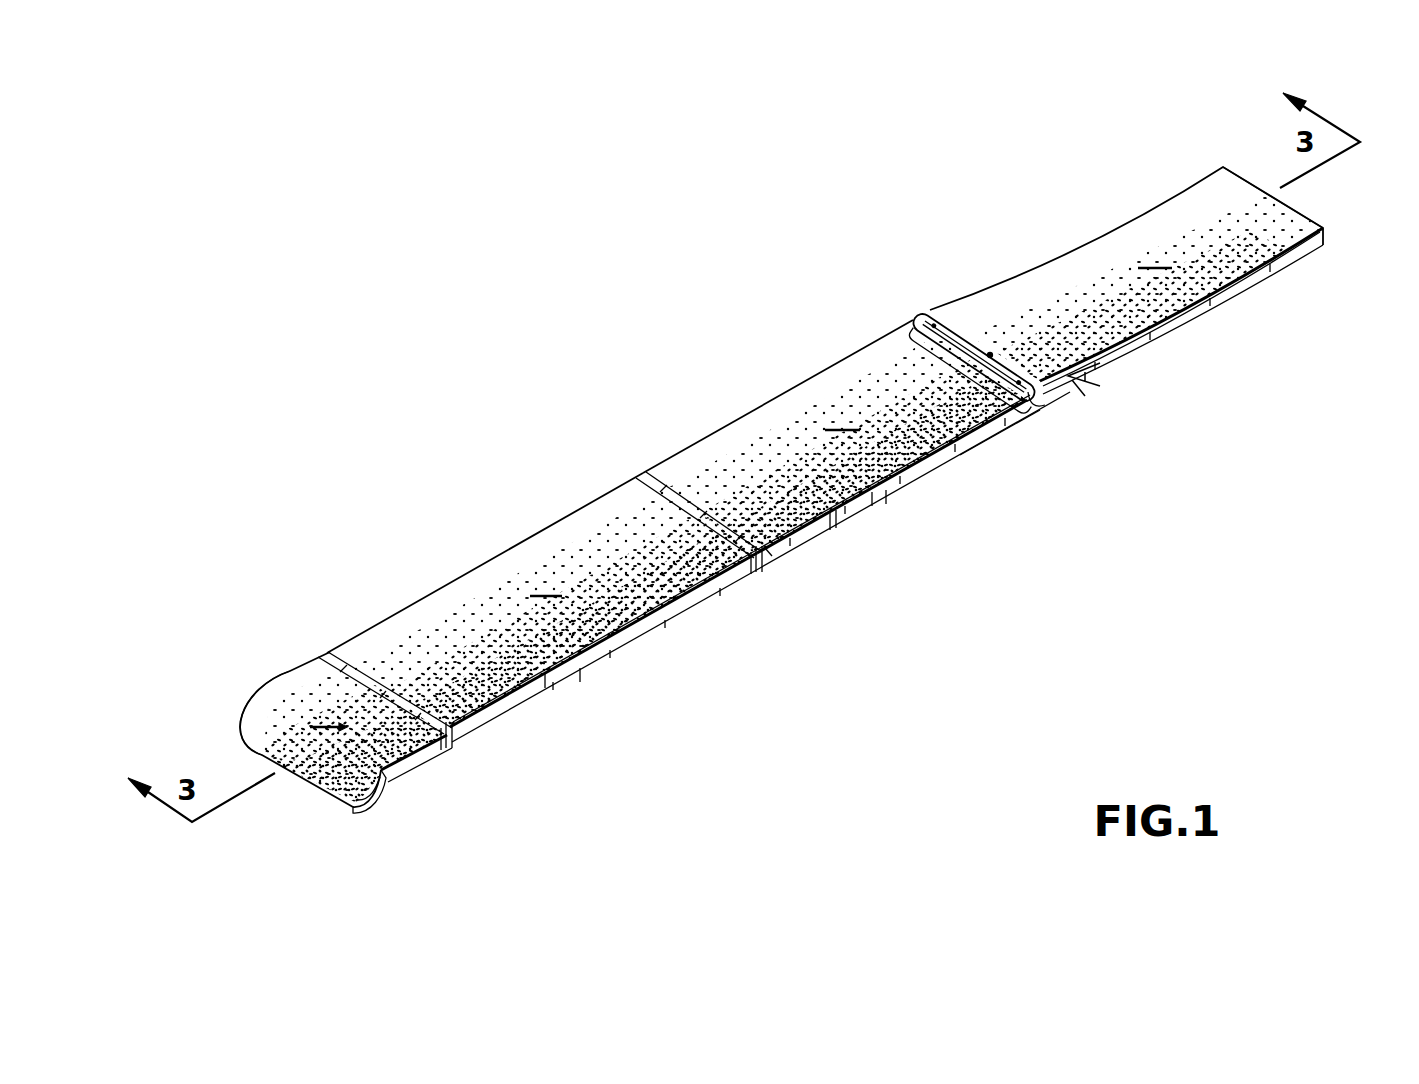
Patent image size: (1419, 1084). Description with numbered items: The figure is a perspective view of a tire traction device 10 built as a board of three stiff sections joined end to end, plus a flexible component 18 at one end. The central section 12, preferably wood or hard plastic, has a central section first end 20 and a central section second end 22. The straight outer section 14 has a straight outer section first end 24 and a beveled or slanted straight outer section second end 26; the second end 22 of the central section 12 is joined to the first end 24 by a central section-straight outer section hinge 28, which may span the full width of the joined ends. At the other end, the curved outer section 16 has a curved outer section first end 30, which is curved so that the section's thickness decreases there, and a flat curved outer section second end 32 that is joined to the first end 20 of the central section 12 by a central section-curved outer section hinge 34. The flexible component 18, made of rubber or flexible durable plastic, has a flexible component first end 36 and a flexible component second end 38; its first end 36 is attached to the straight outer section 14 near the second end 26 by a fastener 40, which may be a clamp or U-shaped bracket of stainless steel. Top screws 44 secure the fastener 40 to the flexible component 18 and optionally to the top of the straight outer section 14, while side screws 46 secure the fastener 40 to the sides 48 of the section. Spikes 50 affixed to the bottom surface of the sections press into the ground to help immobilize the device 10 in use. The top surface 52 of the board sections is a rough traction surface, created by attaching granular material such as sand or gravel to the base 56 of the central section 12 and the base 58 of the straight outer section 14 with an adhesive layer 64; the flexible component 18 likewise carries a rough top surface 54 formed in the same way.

The tire traction device 10 is at (512, 358).
The central section 12 is at (516, 566).
The straight outer section 14 is at (850, 377).
The curved outer section 16 is at (290, 697).
The flexible component 18 is at (1160, 222).
The central section first end 20 is at (461, 732).
The central section second end 22 is at (757, 565).
The straight outer section first end 24 is at (768, 556).
The straight outer section second end 26 is at (1090, 383).
The central section-straight outer section hinge 28 is at (688, 507).
The curved outer section first end 30 is at (275, 752).
The curved outer section second end 32 is at (447, 740).
The central section-curved outer section hinge 34 is at (330, 665).
The flexible component first end 36 is at (985, 390).
The flexible component second end 38 is at (1297, 207).
The fastener 40 is at (938, 330).
The top screws 44 is at (990, 355).
The side screws 46 is at (1050, 405).
The sides 48 is at (835, 520).
The spikes 50 is at (890, 495).
The top surface 52 is at (585, 564).
The rough top surface 54 is at (1155, 248).
The base 56 is at (550, 684).
The base 58 is at (875, 498).
The adhesive layer 64 is at (380, 775).